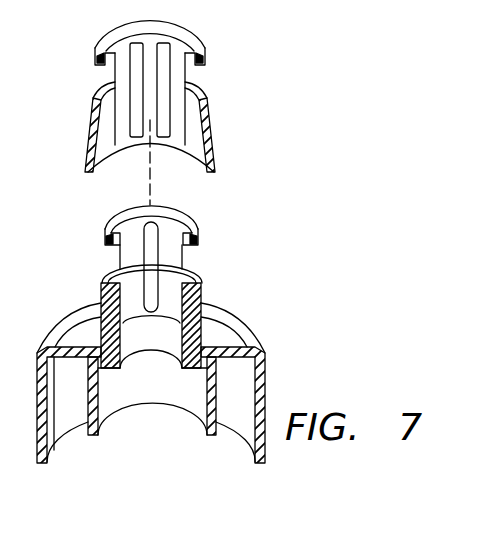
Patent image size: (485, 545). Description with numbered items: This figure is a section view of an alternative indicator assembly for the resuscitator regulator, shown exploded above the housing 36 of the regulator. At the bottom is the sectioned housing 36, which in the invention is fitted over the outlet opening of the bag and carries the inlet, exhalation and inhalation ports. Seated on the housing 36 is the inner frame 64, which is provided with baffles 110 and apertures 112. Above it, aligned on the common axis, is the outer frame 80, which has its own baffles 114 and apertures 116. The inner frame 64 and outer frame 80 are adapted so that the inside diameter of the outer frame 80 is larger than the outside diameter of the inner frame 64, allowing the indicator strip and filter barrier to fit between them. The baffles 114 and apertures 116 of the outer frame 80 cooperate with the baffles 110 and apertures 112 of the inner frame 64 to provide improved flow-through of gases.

The housing 36 is at (264, 361).
The inner frame 64 is at (204, 295).
The outer frame 80 is at (206, 58).
The baffles 110 is at (104, 281).
The apertures 112 is at (156, 226).
The baffles 114 is at (211, 120).
The apertures 116 is at (166, 74).